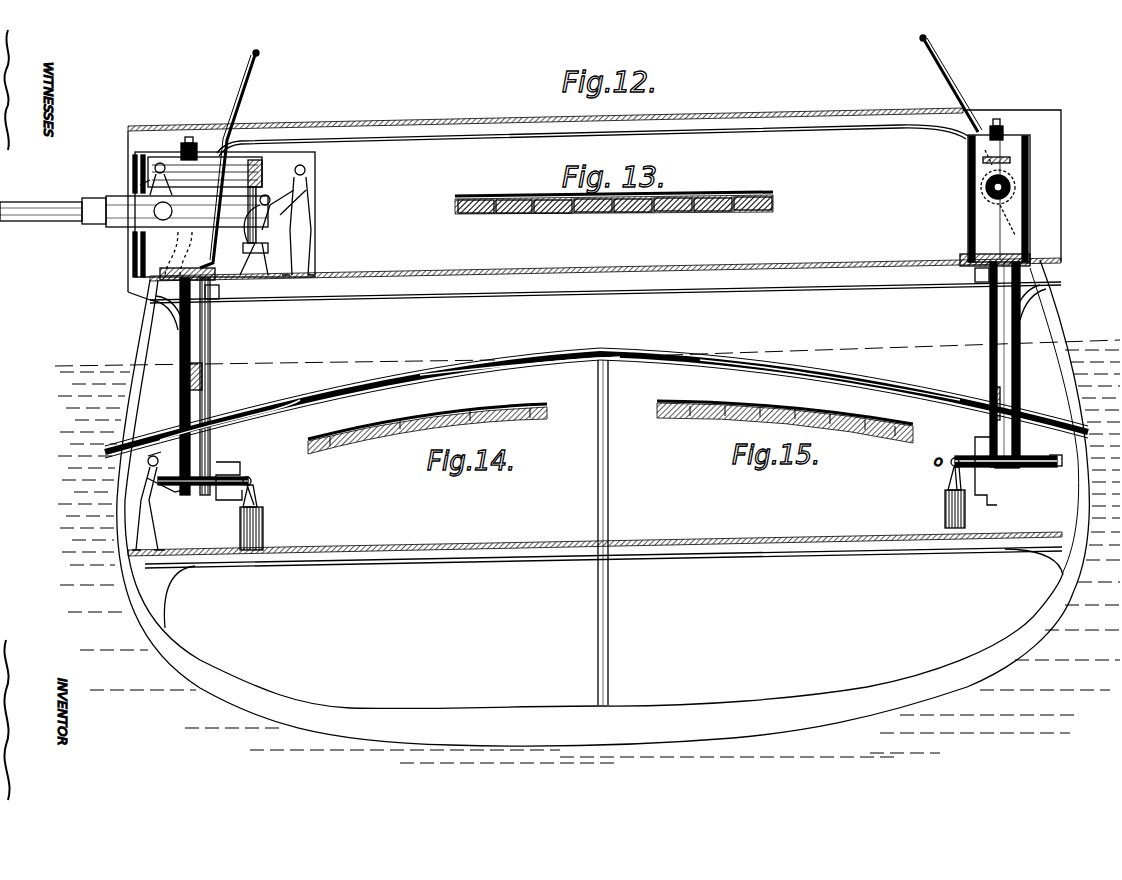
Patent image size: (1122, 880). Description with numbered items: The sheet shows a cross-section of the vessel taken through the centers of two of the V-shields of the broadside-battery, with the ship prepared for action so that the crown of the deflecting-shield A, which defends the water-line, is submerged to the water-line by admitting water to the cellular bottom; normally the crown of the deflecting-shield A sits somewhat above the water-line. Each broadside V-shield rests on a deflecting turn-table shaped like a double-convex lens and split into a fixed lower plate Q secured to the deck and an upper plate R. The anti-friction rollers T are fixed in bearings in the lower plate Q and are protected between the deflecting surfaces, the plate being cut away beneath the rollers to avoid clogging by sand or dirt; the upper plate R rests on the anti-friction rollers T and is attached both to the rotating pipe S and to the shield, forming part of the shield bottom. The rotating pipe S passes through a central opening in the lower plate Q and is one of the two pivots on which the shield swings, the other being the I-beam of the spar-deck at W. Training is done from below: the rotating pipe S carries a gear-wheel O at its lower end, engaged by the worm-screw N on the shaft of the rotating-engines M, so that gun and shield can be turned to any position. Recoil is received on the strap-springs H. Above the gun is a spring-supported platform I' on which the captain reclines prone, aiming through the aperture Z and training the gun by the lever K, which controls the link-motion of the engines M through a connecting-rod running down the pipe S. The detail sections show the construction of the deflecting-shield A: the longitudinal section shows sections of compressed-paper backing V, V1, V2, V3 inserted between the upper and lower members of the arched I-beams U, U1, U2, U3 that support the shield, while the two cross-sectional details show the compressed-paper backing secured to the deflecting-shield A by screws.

In FIG. 12, the aperture Z is at (133, 172).
In FIG. 12, the lever K is at (168, 199).
In FIG. 12, the platform I' is at (579, 165).
In FIG. 12, the I-beam of the spar-deck W is at (591, 137).
In FIG. 12, the strap-springs H is at (243, 246).
In FIG. 12, the anti-friction rollers T is at (598, 303).
In FIG. 12, the upper plate R is at (602, 261).
In FIG. 12, the lower plate Q is at (597, 286).
In FIG. 12, the rotating pipe S is at (210, 340).
In FIG. 12, the deflecting-shield A is at (270, 402).
In FIG. 12, the gear-wheel O is at (190, 501).
In FIG. 12, the worm-screw N is at (642, 480).
In FIG. 12, the rotating-engines M is at (602, 508).
In FIG. 13, the arched I-beam U is at (478, 219).
In FIG. 13, the compressed-paper backing section V is at (516, 218).
In FIG. 14, the compressed-paper backing section V is at (427, 438).
In FIG. 15, the compressed-paper backing section V is at (785, 429).
In FIG. 13, the arched I-beam U1 is at (559, 218).
In FIG. 13, the compressed-paper backing section V1 is at (597, 217).
In FIG. 13, the arched I-beam U2 is at (636, 217).
In FIG. 13, the compressed-paper backing section V2 is at (675, 216).
In FIG. 13, the arched I-beam U3 is at (715, 215).
In FIG. 13, the compressed-paper backing section V3 is at (753, 214).